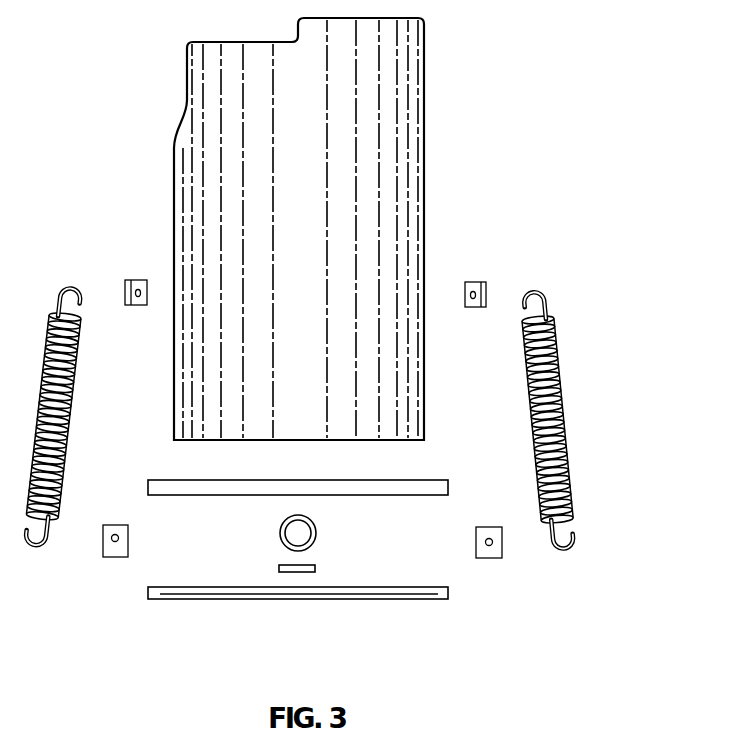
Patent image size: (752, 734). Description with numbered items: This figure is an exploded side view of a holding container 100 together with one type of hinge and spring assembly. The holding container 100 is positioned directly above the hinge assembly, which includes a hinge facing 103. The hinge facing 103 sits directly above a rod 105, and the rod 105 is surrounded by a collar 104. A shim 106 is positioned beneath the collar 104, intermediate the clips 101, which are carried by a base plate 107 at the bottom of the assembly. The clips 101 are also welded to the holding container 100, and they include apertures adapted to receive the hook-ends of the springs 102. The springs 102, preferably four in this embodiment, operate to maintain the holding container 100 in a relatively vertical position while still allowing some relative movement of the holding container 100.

The holding container 100 is at (392, 150).
The clips 101 is at (134, 276).
The springs 102 is at (64, 282).
The hinge facing 103 is at (440, 478).
The collar 104 is at (273, 523).
The rod 105 is at (292, 538).
The shim 106 is at (314, 575).
The base plate 107 is at (405, 601).